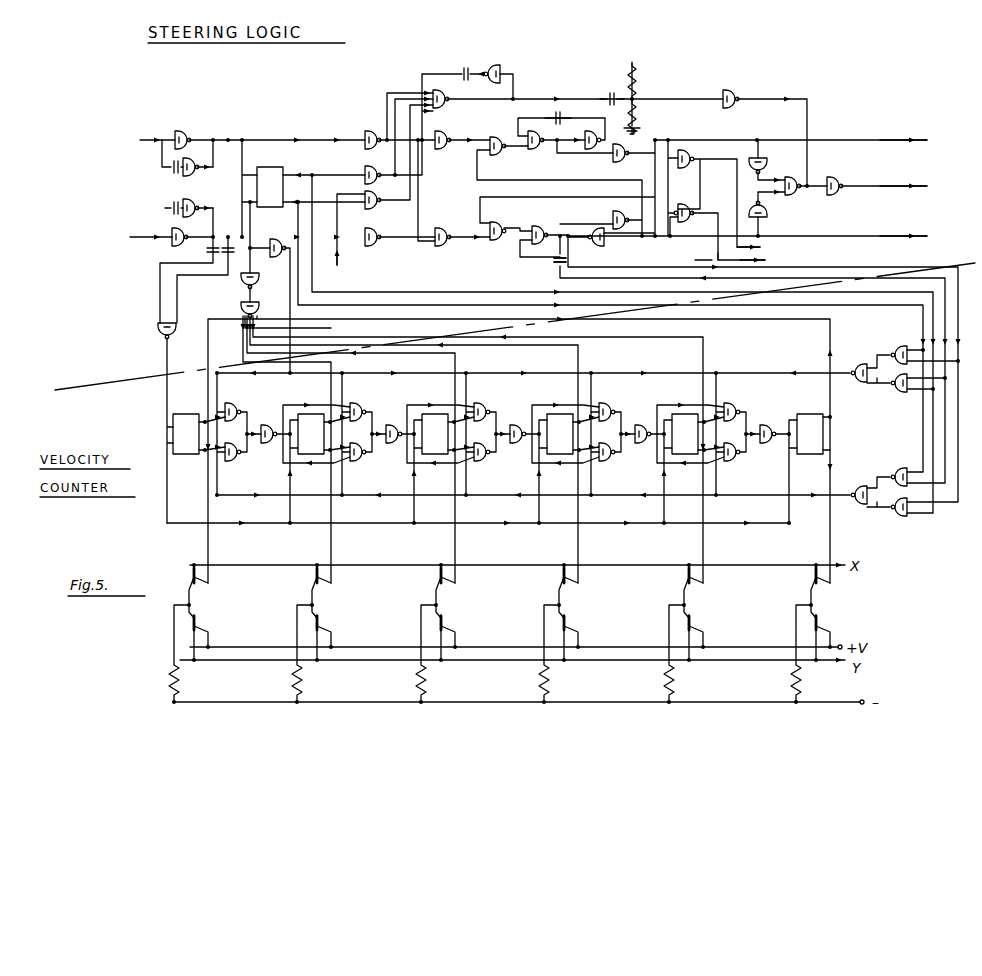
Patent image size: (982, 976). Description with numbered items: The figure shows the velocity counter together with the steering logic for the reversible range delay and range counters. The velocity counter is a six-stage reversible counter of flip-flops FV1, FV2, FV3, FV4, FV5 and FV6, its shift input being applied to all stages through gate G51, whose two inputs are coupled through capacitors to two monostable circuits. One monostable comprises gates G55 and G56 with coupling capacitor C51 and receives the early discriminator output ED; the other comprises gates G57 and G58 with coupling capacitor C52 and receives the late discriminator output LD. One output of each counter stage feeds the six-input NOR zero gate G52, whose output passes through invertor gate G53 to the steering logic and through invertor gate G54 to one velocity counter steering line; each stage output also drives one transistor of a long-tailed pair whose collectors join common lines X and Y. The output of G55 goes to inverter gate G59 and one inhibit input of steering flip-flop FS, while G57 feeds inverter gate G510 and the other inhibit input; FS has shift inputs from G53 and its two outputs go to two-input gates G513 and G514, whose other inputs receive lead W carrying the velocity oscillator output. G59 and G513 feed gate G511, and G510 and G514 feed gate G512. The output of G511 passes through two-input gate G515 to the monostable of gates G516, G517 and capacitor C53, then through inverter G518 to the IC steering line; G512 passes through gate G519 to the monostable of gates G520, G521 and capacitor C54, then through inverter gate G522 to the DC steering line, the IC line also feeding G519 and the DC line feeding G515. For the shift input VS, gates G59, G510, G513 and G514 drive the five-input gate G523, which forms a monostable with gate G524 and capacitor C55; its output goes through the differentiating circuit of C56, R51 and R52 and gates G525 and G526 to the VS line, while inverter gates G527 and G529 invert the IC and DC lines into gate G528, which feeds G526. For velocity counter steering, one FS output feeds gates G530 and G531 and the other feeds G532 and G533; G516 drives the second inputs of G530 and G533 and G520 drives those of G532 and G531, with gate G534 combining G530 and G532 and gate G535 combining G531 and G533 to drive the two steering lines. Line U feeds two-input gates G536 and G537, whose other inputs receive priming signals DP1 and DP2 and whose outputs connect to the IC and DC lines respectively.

The gate G51 is at (158, 330).
The six-input NOR gate G52 is at (241, 306).
The invertor gate G53 is at (258, 282).
The invertor gate G54 is at (283, 232).
The gate G55 is at (270, 132).
The gate G56 is at (183, 180).
The gate G57 is at (175, 246).
The gate G58 is at (183, 198).
The inverter gate G59 is at (364, 131).
The inverter gate G510 is at (381, 249).
The gate G511 is at (447, 151).
The gate G512 is at (447, 226).
The two-input gate G513 is at (368, 166).
The two-input gate G514 is at (380, 200).
The two-input gate G515 is at (502, 158).
The gate G516 is at (528, 138).
The gate G517 is at (590, 150).
The inverter G518 is at (633, 162).
The two-input gate G519 is at (491, 241).
The gate G520 is at (525, 224).
The gate G521 is at (605, 244).
The inverter gate G522 is at (616, 214).
The five-input gate G523 is at (452, 106).
The gate G524 is at (494, 70).
The gate G525 is at (738, 88).
The gate G526 is at (841, 175).
The inverter gate G527 is at (766, 162).
The gate G528 is at (795, 195).
The inverter gate G529 is at (768, 214).
The gate G530 is at (903, 340).
The gate G531 is at (903, 460).
The gate G532 is at (898, 392).
The gate G533 is at (900, 516).
The gate G534 is at (857, 364).
The gate G535 is at (857, 486).
The two-input gate G536 is at (686, 150).
The two-input gate G537 is at (692, 202).
The coupling capacitor C51 is at (162, 160).
The coupling capacitor C52 is at (165, 215).
The capacitor C53 is at (556, 110).
The capacitor C54 is at (558, 268).
The capacitor C55 is at (462, 64).
The capacitor C56 is at (604, 89).
The resistor R51 is at (634, 80).
The resistor R52 is at (636, 113).
The steering flip-flop FS is at (270, 187).
The flip-flop FV1 is at (185, 408).
The flip-flop FV2 is at (310, 408).
The flip-flop FV3 is at (434, 408).
The flip-flop FV4 is at (559, 408).
The flip-flop FV5 is at (684, 408).
The flip-flop FV6 is at (818, 408).
The early discriminator output ED is at (146, 139).
The late discriminator output LD is at (139, 242).
The lead W is at (336, 270).
The IC steering line IC is at (903, 130).
The shift input line VS is at (914, 187).
The DC steering line DC is at (915, 237).
The DP1 signal DP1 is at (768, 248).
The DP2 signal DP2 is at (712, 262).
The line U is at (760, 262).